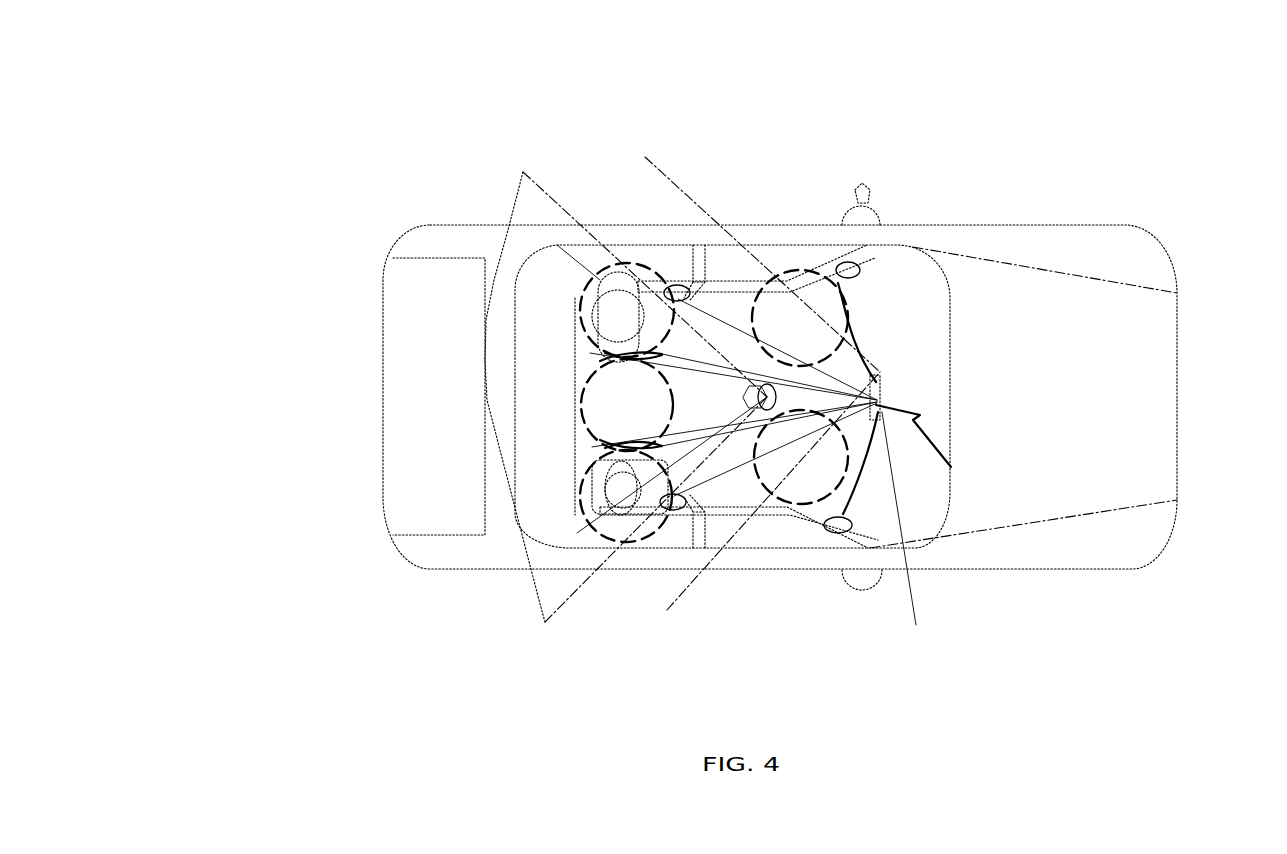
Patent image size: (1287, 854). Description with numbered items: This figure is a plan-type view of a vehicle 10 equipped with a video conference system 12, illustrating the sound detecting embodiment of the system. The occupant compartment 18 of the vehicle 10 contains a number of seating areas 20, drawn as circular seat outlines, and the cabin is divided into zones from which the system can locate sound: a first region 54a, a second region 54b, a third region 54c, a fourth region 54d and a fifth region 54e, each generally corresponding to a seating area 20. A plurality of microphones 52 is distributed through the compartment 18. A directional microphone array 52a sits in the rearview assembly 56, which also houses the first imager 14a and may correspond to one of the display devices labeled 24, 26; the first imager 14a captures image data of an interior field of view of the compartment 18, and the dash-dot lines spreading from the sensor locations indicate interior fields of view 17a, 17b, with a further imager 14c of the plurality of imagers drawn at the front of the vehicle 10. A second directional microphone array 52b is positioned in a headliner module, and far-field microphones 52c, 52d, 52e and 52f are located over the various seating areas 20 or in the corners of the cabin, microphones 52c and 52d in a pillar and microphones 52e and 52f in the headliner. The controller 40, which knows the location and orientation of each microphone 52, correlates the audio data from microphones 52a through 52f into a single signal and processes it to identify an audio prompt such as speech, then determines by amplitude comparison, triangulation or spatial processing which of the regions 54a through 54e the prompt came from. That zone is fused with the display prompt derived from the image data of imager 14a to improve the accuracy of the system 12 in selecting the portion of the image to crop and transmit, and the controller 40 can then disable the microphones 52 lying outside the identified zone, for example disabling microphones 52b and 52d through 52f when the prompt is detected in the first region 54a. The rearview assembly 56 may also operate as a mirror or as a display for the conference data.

The vehicle 10 is at (503, 121).
The video conference system 12 is at (1133, 349).
The first imager 14a is at (762, 404).
The camera sensor 14c is at (862, 181).
The field of view 17a is at (689, 590).
The field of view 17b is at (568, 600).
The occupant compartment 18 is at (795, 539).
The seating areas 20 is at (149, 236).
The display device 24 is at (1009, 524).
The processor 26 is at (878, 408).
The controller 40 is at (880, 407).
The microphone 52 is at (880, 395).
The directional microphone array 52a is at (938, 442).
The directional microphone array 52b is at (770, 400).
The far-field microphone 52c is at (858, 263).
The far-field microphone 52d is at (938, 518).
The far-field microphone 52e is at (677, 286).
The far-field microphone 52f is at (677, 512).
The first region 54a is at (853, 337).
The second region 54b is at (846, 523).
The third region 54c is at (703, 330).
The fourth region 54d is at (706, 410).
The fifth region 54e is at (711, 483).
The rearview assembly 56 is at (889, 402).